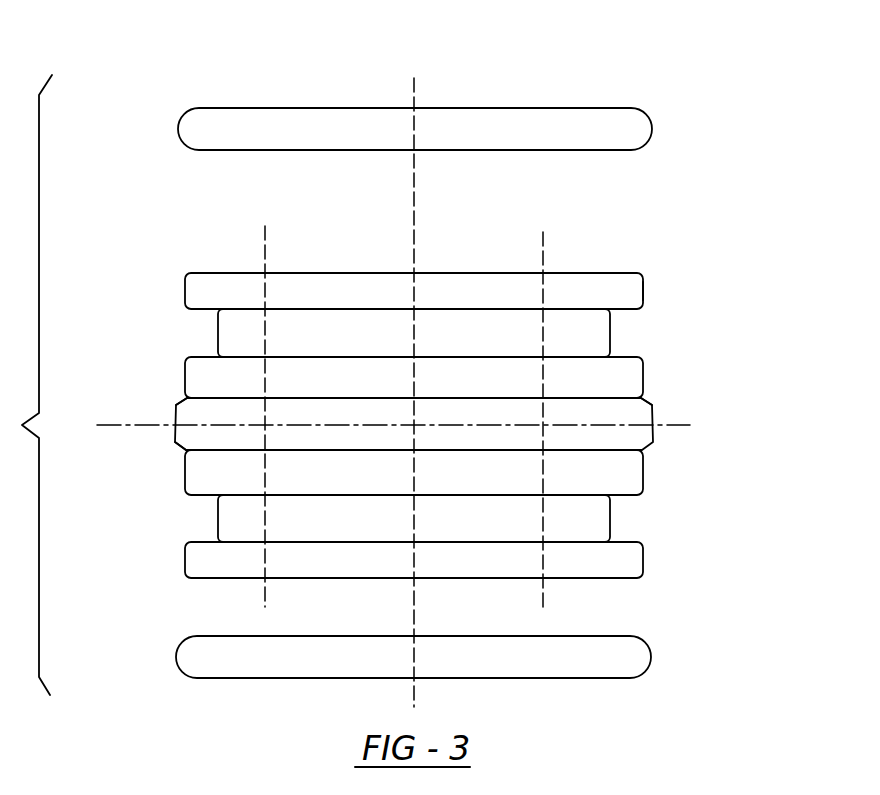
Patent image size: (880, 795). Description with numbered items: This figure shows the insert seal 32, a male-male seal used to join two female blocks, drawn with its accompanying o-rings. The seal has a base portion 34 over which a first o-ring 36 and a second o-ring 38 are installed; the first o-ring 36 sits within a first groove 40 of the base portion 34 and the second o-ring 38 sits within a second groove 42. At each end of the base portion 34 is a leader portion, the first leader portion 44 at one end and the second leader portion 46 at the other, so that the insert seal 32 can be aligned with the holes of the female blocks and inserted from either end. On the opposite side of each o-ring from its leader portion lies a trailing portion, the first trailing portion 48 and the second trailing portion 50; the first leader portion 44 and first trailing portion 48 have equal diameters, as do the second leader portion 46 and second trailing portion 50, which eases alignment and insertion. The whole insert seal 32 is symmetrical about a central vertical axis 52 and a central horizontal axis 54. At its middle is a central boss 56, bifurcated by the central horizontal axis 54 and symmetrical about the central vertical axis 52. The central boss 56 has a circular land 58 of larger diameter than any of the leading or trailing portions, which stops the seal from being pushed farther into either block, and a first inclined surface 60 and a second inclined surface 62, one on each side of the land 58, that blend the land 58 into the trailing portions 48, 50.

The insert seal 32 is at (706, 112).
The base portion 34 is at (233, 271).
The first o-ring 36 is at (178, 130).
The second o-ring 38 is at (651, 657).
The first groove 40 is at (217, 328).
The second groove 42 is at (610, 515).
The first leader portion 44 is at (643, 293).
The second leader portion 46 is at (643, 568).
The first trailing portion 48 is at (643, 378).
The second trailing portion 50 is at (643, 474).
The central vertical axis 52 is at (414, 221).
The central horizontal axis 54 is at (127, 427).
The central boss 56 is at (652, 402).
The land 58 is at (175, 418).
The first inclined surface 60 is at (175, 406).
The second inclined surface 62 is at (177, 447).